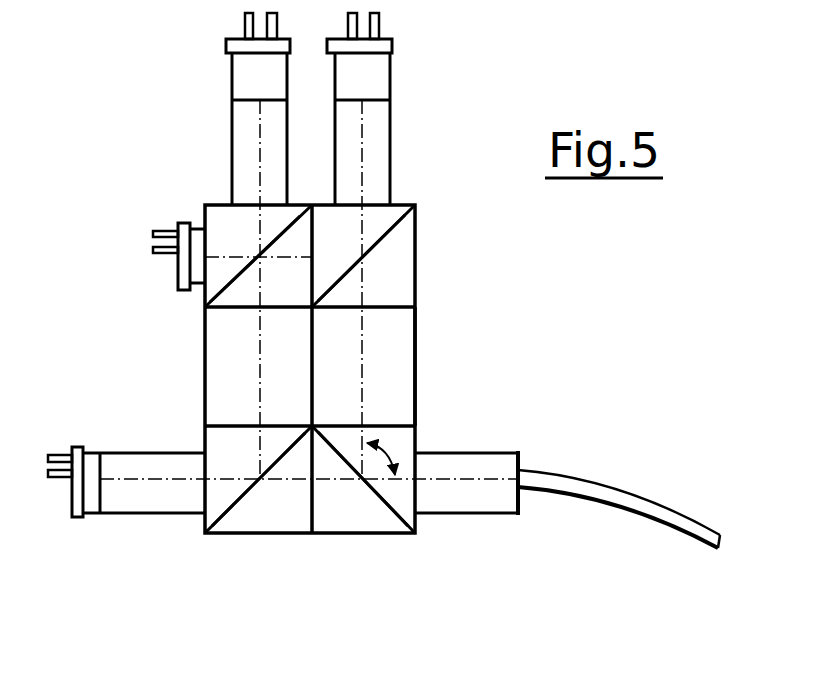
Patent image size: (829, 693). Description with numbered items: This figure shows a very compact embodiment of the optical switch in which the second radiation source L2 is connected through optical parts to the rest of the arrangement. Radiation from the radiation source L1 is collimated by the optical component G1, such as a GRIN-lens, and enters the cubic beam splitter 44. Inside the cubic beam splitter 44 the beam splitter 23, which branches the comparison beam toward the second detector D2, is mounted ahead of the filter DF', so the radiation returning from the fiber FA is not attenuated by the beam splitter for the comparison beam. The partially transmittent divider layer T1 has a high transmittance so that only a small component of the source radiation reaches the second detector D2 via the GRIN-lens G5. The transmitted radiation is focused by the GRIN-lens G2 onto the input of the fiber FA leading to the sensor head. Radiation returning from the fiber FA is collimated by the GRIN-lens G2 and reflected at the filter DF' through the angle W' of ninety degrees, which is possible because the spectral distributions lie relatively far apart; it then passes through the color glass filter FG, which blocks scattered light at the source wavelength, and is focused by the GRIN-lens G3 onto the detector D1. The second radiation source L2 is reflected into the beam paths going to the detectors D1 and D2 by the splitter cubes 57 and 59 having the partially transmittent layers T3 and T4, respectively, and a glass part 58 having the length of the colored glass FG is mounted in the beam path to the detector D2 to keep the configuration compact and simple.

The detector D1 is at (377, 80).
The second detector D2 is at (245, 78).
The GRIN-lens G3 is at (374, 135).
The GRIN-lens G5 is at (243, 127).
The splitter cube 57 is at (222, 218).
The splitter cube 59 is at (373, 225).
The glass part 58 is at (218, 383).
The beam splitter 23 is at (253, 513).
The partially transmittent layer T3 is at (232, 283).
The partially transmittent layer T4 is at (390, 241).
The partially transmittent divider layer T1 is at (277, 463).
The filter DF' is at (363, 515).
The cubic beam splitter 44 is at (405, 498).
The color glass filter FG is at (387, 357).
The angle W' is at (421, 430).
The radiation source L1 is at (93, 495).
The second radiation source L2 is at (188, 265).
The optical component for collimating G1 is at (155, 497).
The GRIN-lens G2 is at (485, 498).
The fiber FA is at (615, 497).